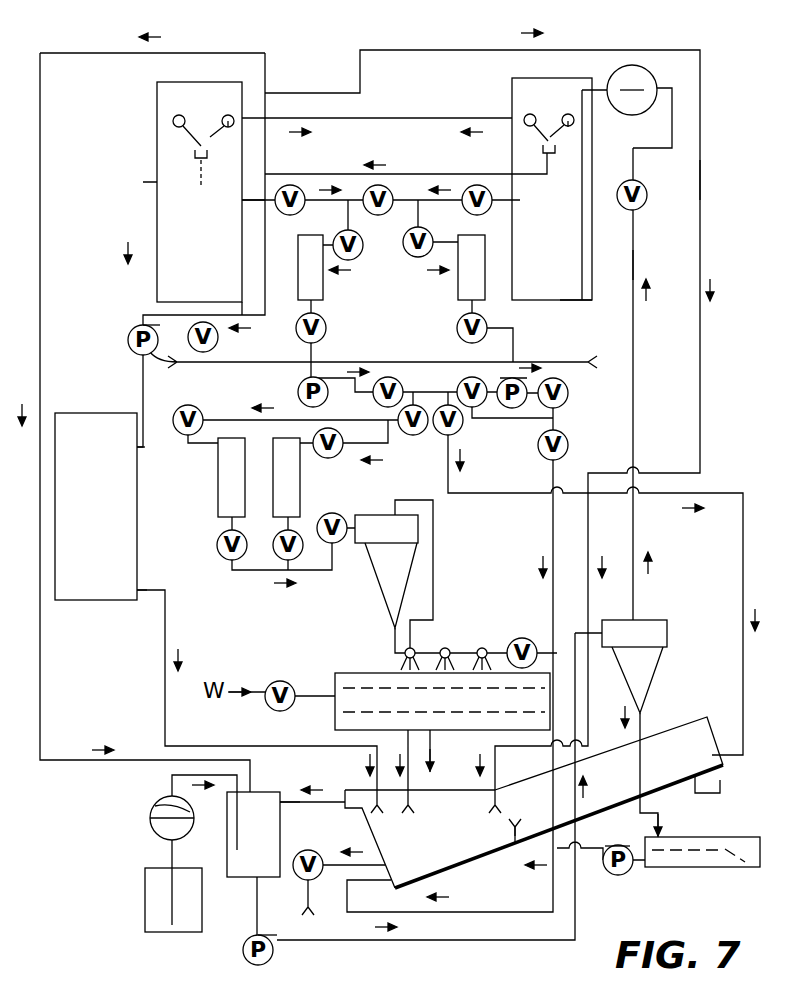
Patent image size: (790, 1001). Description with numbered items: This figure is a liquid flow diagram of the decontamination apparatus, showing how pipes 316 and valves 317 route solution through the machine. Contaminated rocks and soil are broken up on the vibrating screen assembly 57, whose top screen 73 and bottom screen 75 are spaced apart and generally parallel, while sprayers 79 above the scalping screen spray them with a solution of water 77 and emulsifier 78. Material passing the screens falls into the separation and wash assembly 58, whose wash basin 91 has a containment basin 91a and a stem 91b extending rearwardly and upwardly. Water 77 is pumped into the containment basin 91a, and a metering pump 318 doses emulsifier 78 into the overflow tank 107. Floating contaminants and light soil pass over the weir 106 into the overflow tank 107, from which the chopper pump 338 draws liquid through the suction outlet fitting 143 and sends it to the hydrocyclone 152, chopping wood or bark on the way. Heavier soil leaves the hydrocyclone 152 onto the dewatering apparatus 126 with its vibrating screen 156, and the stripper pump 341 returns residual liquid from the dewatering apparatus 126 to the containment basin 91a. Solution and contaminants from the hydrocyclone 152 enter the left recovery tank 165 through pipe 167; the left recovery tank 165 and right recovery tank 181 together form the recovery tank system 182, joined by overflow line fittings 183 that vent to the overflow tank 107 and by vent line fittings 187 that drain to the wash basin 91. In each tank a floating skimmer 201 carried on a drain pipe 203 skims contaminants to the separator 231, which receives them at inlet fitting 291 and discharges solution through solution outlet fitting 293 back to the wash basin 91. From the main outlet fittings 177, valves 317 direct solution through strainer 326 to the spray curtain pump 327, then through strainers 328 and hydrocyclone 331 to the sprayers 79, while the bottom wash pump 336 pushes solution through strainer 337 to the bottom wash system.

The vibrating screen assembly 57 is at (336, 683).
The separation and wash assembly 58 is at (722, 787).
The top screen 73 is at (361, 688).
The bottom screen 75 is at (402, 712).
The water 77 is at (216, 682).
The biodegradable surfactant or emulsifier 78 is at (145, 900).
The sprayers 79 is at (483, 650).
The wash basin 91 is at (446, 837).
The containment basin 91a is at (470, 870).
The stem 91b is at (700, 727).
The overflow weir 106 is at (280, 810).
The overflow tank 107 is at (270, 837).
The dewatering apparatus 126 is at (726, 836).
The suction outlet fitting 143 is at (258, 872).
The hydrocyclone 152 is at (655, 628).
The vibrating screen 156 is at (750, 867).
The left recovery tank 165 is at (572, 262).
The inlet pipe 167 is at (584, 145).
The main outlet fittings 177 is at (242, 201).
The right recovery tank 181 is at (216, 260).
The recovery tank system 182 is at (258, 80).
The overflow line fittings 183 is at (238, 119).
The vent line fittings 187 is at (242, 78).
The floating skimmer 201 is at (229, 131).
The drain pipe 203 is at (193, 160).
The separator 231 is at (114, 530).
The inlet fitting 291 is at (137, 447).
The solution outlet fitting 293 is at (137, 590).
The pipes 316 is at (699, 188).
The valves 317 is at (640, 64).
The metering pump 318 is at (150, 818).
The strainer 326 is at (323, 282).
The spray curtain pump 327 is at (298, 392).
The strainers 328 is at (218, 496).
The hydrocyclone 331 is at (383, 523).
The bottom wash pump 336 is at (514, 409).
The strainer 337 is at (458, 283).
The chopper pump 338 is at (270, 960).
The stripper pump 341 is at (620, 875).